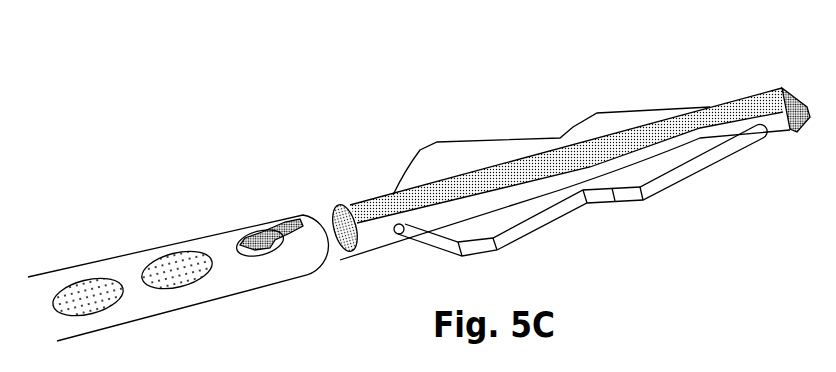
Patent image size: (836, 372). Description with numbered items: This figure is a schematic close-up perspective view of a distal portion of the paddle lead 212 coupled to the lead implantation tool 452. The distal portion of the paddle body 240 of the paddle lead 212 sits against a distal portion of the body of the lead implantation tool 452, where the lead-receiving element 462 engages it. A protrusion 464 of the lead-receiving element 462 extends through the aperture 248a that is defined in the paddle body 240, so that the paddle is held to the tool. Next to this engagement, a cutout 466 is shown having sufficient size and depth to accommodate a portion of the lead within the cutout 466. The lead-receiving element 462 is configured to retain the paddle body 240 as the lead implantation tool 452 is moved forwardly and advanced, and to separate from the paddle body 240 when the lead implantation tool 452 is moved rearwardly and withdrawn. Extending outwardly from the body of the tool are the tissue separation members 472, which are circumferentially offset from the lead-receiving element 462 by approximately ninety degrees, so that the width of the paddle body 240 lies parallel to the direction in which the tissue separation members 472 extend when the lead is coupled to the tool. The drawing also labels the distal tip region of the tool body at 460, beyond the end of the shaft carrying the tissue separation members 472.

The paddle lead 212 is at (62, 230).
The paddle body 240 is at (157, 250).
The aperture 248a is at (250, 232).
The protrusion 464 is at (290, 225).
The cutout 466 is at (333, 213).
The lead implantation tool 452 is at (414, 90).
The distal tip 460 is at (807, 100).
The tissue separation members 472 is at (650, 232).
The lead-receiving element 462 is at (328, 292).